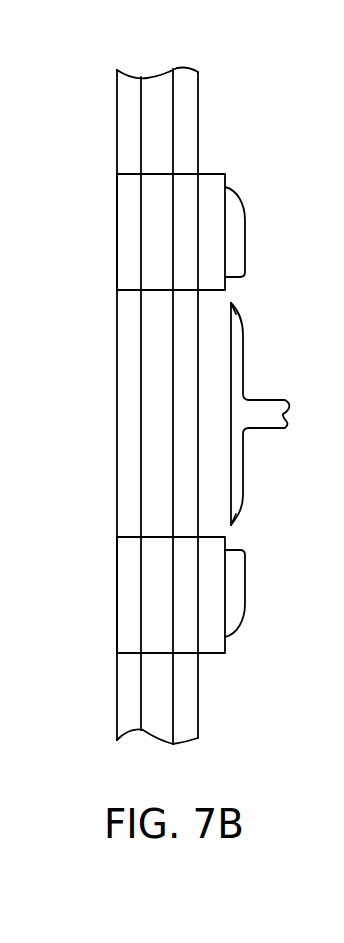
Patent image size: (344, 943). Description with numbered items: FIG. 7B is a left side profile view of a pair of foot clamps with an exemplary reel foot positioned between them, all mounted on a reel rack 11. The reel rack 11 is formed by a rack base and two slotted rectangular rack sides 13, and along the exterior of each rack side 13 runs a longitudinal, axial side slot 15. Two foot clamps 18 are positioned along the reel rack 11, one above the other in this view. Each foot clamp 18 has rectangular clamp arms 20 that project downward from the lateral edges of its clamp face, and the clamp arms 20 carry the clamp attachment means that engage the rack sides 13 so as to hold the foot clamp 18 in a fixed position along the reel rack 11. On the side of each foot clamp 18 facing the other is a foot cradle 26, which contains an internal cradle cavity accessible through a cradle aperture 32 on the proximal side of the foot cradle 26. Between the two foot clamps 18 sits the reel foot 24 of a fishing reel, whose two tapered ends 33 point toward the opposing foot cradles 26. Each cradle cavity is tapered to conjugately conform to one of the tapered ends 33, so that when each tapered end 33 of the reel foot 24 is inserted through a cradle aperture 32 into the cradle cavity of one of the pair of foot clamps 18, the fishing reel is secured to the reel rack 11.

The reel rack 11 is at (227, 100).
The rack side 13 is at (187, 127).
The side slot 15 is at (154, 119).
The foot clamp 18 is at (175, 425).
The clamp arm 20 is at (157, 243).
The reel foot 24 is at (275, 400).
The foot cradle 26 is at (235, 231).
The cradle aperture 32 is at (232, 279).
The tapered end 33 is at (237, 316).